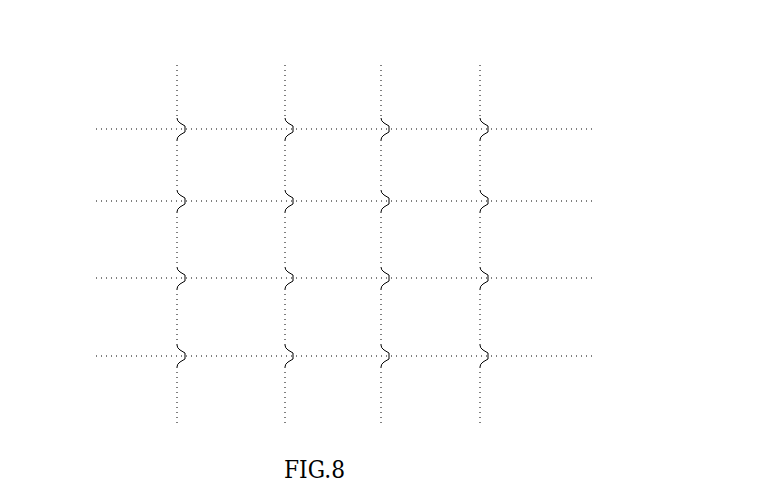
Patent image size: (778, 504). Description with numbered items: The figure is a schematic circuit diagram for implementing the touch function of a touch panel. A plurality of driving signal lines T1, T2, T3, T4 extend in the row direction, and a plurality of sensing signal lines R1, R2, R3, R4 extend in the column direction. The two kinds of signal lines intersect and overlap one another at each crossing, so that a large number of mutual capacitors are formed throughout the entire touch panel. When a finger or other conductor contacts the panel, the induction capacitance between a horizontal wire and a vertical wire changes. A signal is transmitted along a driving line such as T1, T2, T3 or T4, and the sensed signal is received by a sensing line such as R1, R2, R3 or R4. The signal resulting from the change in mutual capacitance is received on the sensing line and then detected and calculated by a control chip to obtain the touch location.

The signal line R1 is at (176, 218).
The signal line R2 is at (283, 218).
The signal line R3 is at (383, 218).
The signal line R4 is at (476, 218).
The signal line T1 is at (312, 124).
The signal line T2 is at (312, 201).
The signal line T3 is at (312, 274).
The signal line T4 is at (312, 358).